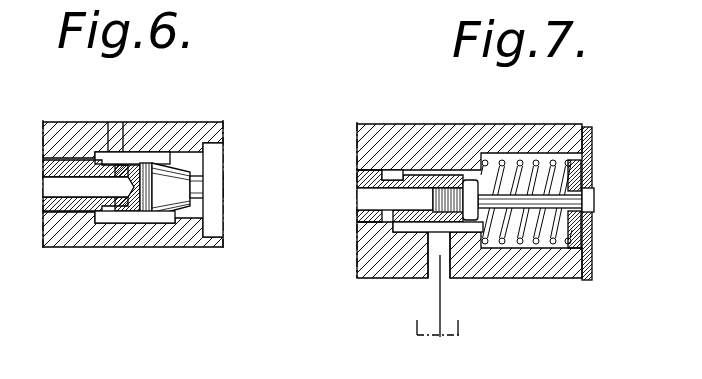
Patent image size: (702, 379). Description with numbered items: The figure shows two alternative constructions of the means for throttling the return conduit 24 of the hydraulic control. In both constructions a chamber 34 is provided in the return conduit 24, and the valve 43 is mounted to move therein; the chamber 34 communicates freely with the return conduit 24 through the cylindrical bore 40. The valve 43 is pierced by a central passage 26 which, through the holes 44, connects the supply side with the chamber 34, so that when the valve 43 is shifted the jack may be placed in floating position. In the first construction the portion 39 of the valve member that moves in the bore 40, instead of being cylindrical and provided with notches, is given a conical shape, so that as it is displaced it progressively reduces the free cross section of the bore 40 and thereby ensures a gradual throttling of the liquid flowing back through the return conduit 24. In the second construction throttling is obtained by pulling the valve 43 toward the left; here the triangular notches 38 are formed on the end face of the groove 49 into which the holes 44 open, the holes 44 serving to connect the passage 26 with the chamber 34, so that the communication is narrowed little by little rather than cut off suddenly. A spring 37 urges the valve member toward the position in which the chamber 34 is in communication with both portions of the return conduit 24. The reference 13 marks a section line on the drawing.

In FIG. 7, the section line 13 is at (461, 327).
In FIG. 6, the return conduit 24 is at (118, 137).
In FIG. 7, the return conduit 24 is at (441, 300).
In FIG. 6, the central passage 26 is at (80, 183).
In FIG. 7, the central passage 26 is at (372, 200).
In FIG. 6, the chamber 34 is at (137, 222).
In FIG. 7, the chamber 34 is at (420, 233).
In FIG. 7, the spring 37 is at (550, 183).
In FIG. 7, the triangular notches 38 is at (444, 172).
In FIG. 6, the portion of slide valve 39 is at (155, 163).
In FIG. 7, the portion of slide valve 39 is at (466, 145).
In FIG. 6, the cylindrical bore 40 is at (190, 215).
In FIG. 6, the valve 43 is at (73, 207).
In FIG. 7, the valve 43 is at (360, 225).
In FIG. 6, the holes 44 is at (118, 170).
In FIG. 7, the holes 44 is at (410, 180).
In FIG. 7, the groove 49 is at (383, 175).